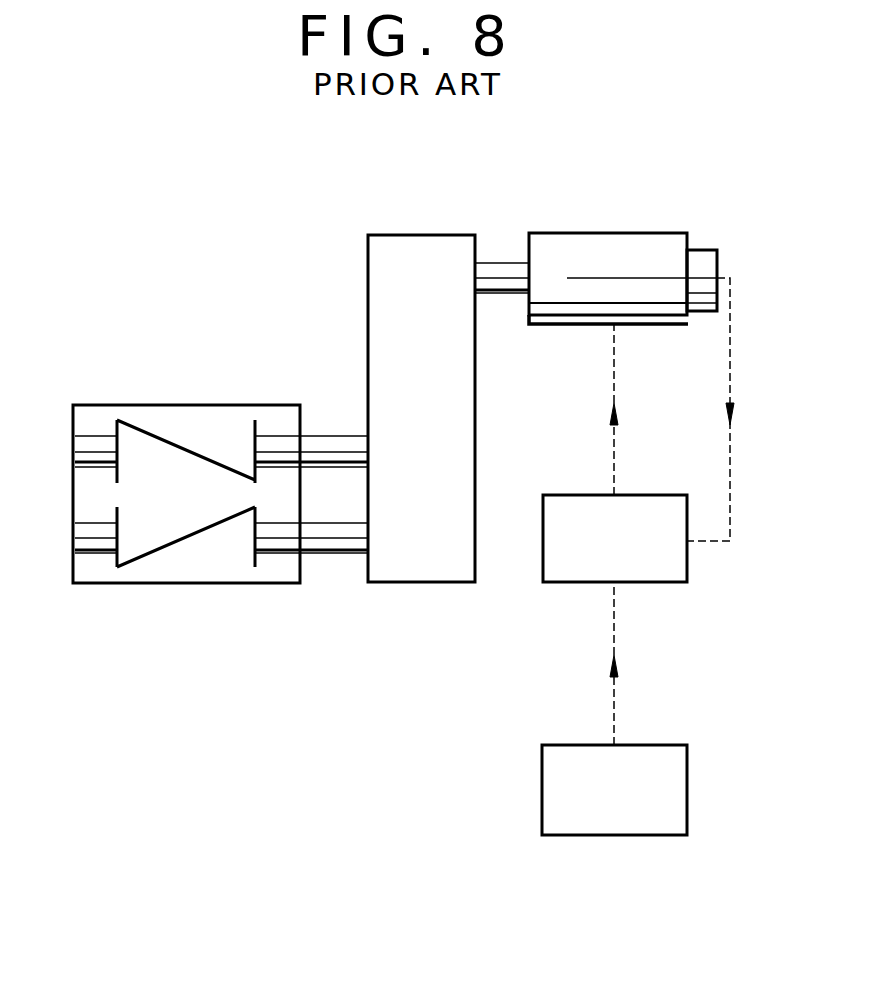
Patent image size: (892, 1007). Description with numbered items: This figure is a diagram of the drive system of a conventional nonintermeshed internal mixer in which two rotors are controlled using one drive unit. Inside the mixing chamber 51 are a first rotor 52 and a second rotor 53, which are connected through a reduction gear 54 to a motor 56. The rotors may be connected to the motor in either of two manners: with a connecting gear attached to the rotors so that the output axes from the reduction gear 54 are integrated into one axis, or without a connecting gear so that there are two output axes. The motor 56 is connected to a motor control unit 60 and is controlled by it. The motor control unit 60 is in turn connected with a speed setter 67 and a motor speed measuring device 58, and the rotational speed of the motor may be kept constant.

The mixing chamber 51 is at (166, 405).
The first rotor 52 is at (208, 456).
The second rotor 53 is at (198, 536).
The reduction gear 54 is at (422, 583).
The motor 56 is at (613, 233).
The motor speed measuring device 58 is at (702, 250).
The motor control unit 60 is at (668, 495).
The speed setter 67 is at (673, 745).